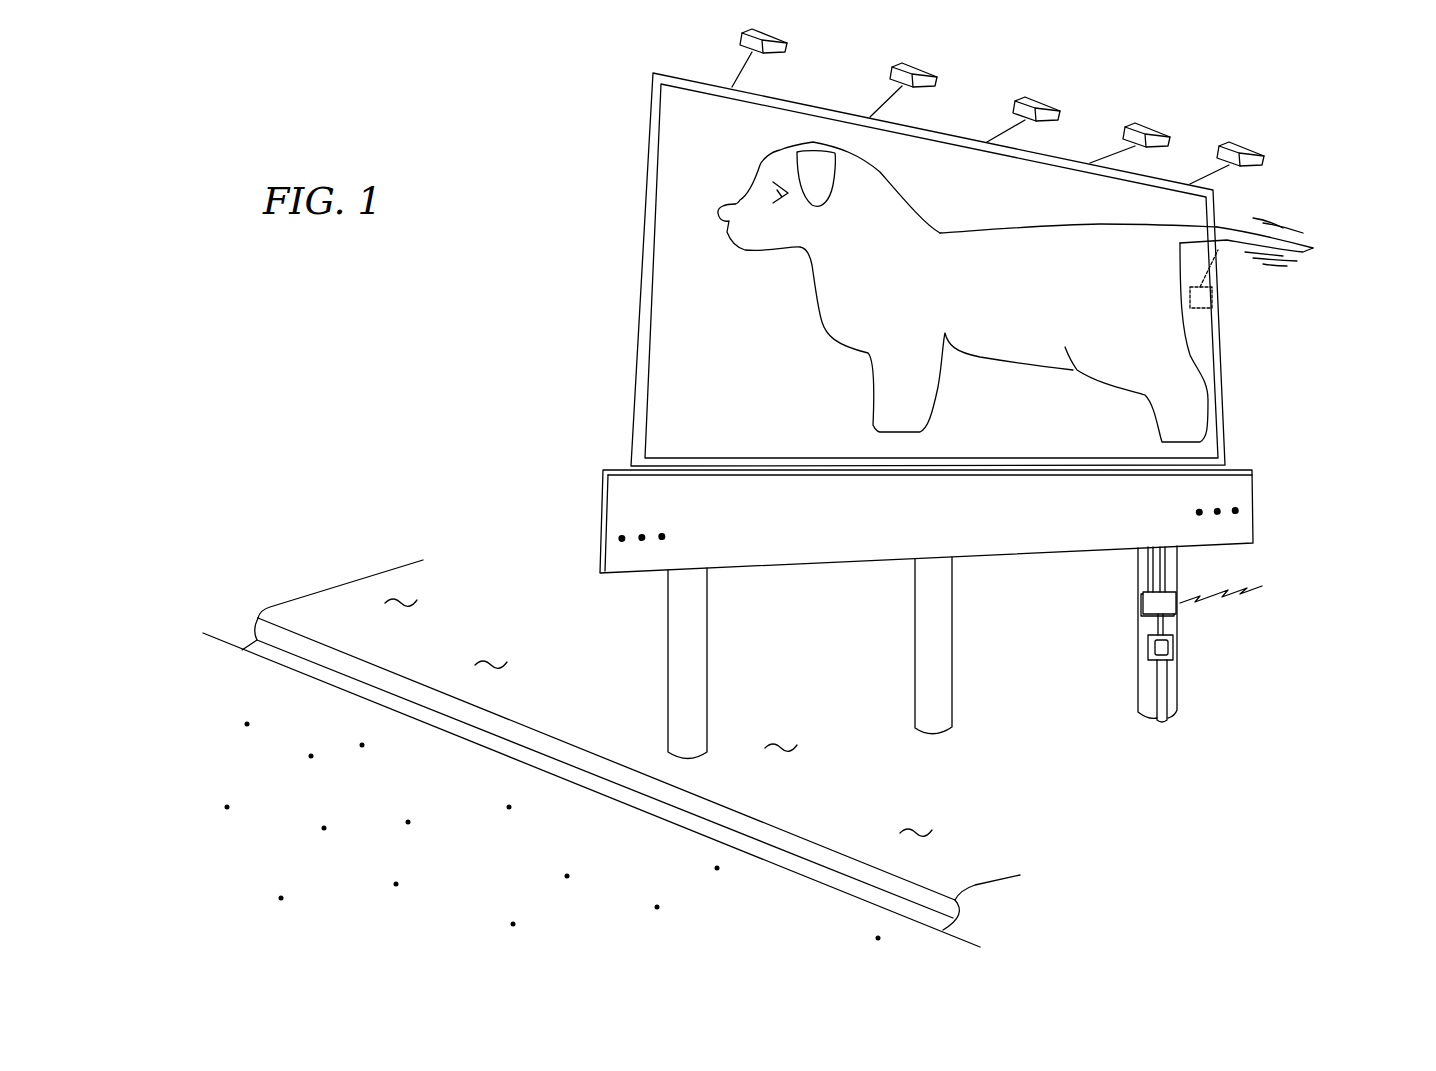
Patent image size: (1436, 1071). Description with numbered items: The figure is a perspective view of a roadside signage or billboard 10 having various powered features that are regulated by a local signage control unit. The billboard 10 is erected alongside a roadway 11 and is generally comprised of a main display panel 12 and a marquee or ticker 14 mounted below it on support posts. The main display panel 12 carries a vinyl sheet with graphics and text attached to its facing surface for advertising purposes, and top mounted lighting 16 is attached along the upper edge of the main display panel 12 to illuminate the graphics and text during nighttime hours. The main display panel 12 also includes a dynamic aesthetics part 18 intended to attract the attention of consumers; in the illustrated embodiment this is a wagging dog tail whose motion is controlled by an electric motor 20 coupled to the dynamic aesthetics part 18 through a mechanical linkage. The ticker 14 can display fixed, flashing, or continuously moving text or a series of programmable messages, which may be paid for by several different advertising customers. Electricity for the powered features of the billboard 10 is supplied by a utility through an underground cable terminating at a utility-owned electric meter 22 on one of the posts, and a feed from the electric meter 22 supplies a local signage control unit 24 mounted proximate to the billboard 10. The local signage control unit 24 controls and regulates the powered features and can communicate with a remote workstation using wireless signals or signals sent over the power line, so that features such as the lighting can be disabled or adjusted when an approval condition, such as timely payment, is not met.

The billboard 10 is at (486, 416).
The roadway 11 is at (486, 884).
The main display panel 12 is at (968, 269).
The marquee or ticker 14 is at (771, 570).
The top mounted lighting 16 is at (1062, 106).
The dynamic aesthetics part 18 is at (1303, 252).
The electric motor 20 is at (1205, 307).
The electric meter 22 is at (1176, 660).
The local signage control unit 24 is at (1143, 615).